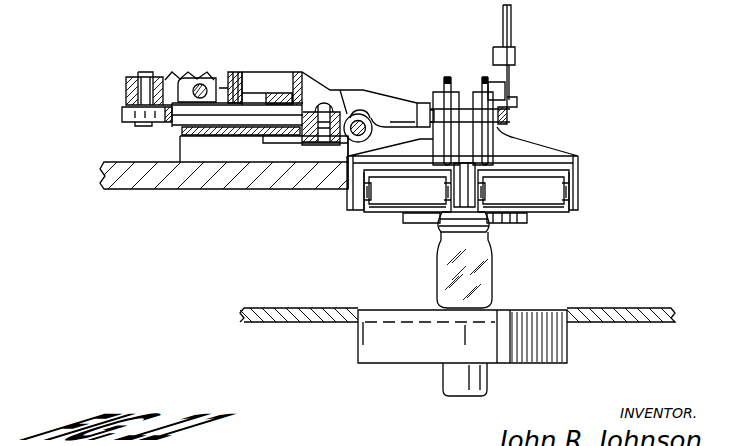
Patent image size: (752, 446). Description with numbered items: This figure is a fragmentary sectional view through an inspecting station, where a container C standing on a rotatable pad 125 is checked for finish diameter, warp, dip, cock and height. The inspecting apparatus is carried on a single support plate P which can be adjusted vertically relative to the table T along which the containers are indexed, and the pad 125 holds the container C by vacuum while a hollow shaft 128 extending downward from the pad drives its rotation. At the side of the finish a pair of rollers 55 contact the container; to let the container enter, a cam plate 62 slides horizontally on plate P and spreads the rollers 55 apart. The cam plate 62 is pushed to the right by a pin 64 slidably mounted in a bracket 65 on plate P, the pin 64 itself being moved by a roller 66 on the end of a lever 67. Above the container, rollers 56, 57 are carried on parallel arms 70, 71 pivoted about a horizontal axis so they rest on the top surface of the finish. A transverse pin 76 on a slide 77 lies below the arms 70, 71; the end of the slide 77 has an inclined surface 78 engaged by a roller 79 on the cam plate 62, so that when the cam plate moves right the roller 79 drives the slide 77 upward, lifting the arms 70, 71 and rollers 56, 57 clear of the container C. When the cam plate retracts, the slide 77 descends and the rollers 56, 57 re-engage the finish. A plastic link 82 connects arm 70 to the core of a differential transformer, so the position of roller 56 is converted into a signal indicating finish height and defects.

The support plate P is at (102, 179).
The table T is at (643, 317).
The container C is at (448, 261).
The rollers 55 is at (515, 226).
The roller 56 is at (557, 214).
The roller 57 is at (404, 196).
The cam plate 62 is at (337, 112).
The pin 64 is at (175, 126).
The bracket 65 is at (276, 93).
The roller 66 is at (124, 114).
The lever 67 is at (126, 80).
The arm 70 is at (487, 78).
The arm 71 is at (448, 78).
The transverse pin 76 is at (508, 116).
The slide 77 is at (387, 112).
The inclined surface 78 is at (357, 112).
The roller 79 is at (348, 148).
The plastic link 82 is at (511, 22).
The pad 125 is at (545, 313).
The hollow shaft 128 is at (460, 379).